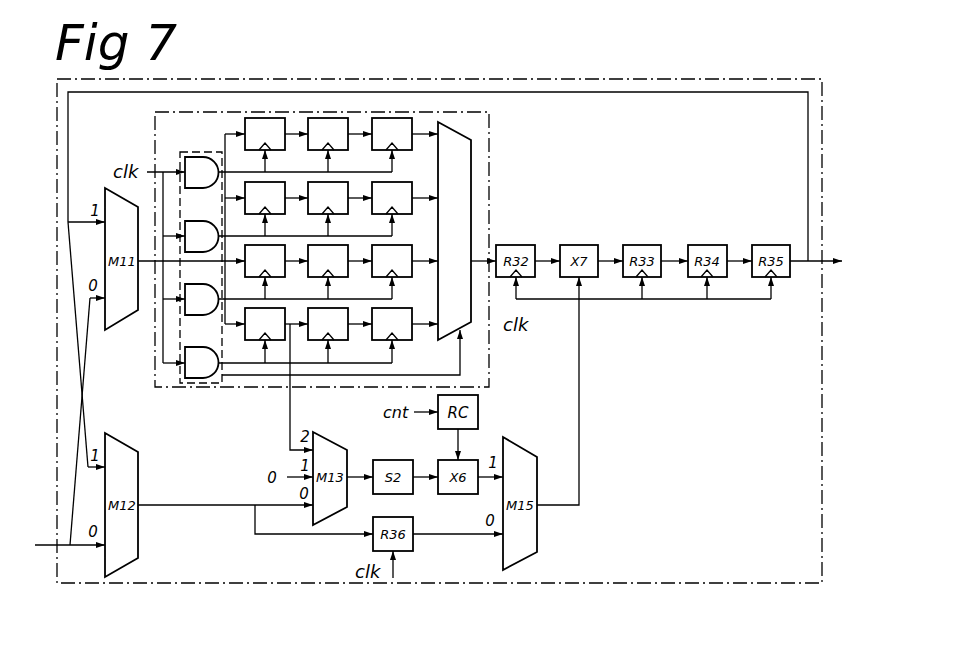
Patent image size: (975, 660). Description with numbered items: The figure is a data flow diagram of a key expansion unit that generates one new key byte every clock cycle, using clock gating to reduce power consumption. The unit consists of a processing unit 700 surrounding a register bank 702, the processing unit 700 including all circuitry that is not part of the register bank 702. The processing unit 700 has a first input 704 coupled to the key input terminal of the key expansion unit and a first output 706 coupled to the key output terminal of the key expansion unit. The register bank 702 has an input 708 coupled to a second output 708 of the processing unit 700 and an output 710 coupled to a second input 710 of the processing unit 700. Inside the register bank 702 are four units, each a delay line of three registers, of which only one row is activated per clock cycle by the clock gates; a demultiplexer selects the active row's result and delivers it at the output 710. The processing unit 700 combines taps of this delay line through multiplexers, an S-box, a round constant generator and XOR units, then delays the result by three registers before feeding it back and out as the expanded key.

The processing unit 700 is at (770, 79).
The register bank 702 is at (489, 121).
The first input 704 is at (57, 545).
The first output 706 is at (821, 259).
The input of the register bank 708 is at (155, 283).
The output of the register bank 710 is at (481, 258).